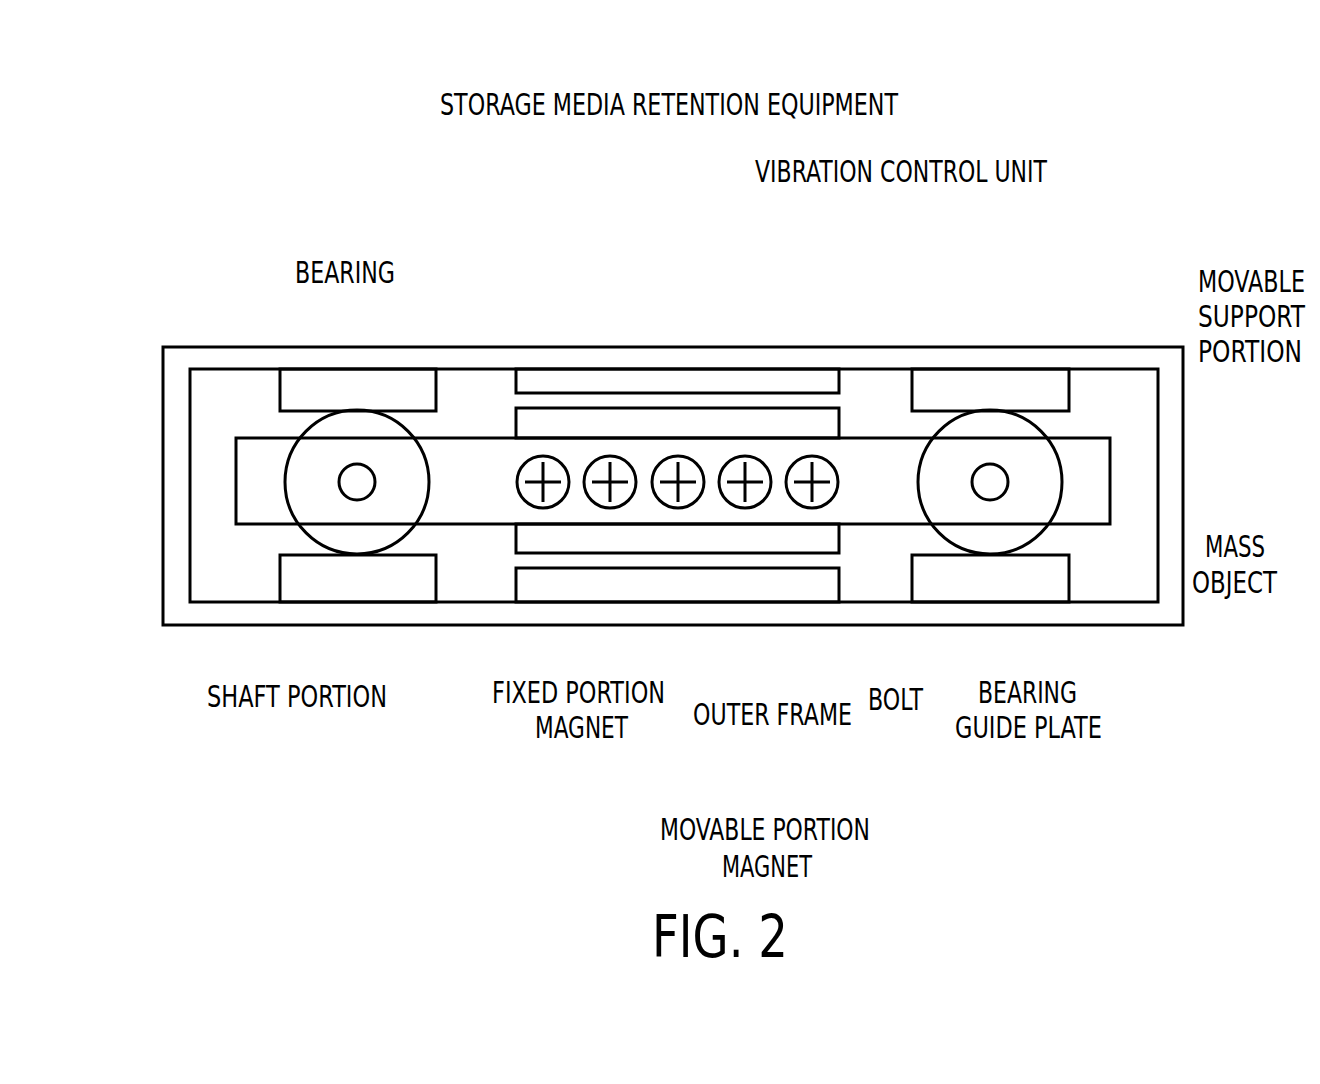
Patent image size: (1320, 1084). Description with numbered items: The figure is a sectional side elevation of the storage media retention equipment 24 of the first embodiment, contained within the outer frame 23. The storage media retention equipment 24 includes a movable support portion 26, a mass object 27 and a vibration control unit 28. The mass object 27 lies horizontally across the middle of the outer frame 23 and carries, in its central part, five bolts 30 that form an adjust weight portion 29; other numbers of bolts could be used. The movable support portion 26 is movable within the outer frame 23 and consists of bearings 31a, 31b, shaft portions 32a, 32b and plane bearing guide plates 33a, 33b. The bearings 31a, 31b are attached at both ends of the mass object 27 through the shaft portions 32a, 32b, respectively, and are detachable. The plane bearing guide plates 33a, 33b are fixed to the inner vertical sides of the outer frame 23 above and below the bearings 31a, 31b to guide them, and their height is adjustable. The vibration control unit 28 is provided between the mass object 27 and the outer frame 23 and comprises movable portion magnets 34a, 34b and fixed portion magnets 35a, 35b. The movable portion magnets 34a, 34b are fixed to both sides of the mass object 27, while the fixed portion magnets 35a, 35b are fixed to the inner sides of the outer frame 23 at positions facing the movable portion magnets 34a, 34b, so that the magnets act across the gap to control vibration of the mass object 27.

The outer frame 23 is at (822, 347).
The storage media retention equipment 24 is at (644, 193).
The movable support portion 26 is at (238, 398).
The mass object 27 is at (1102, 487).
The vibration control unit 28 is at (860, 387).
The adjust weight portion 29 is at (649, 452).
The bolts 30 is at (838, 487).
The bearing 31a is at (360, 420).
The bearing 31b is at (990, 420).
The shaft portion 32a is at (356, 484).
The shaft portion 32b is at (990, 484).
The plane bearing guide plate 33a is at (303, 380).
The plane bearing guide plate 33b is at (1045, 380).
The movable portion magnet 34a is at (615, 418).
The movable portion magnet 34b is at (662, 533).
The fixed portion magnet 35a is at (563, 380).
The fixed portion magnet 35b is at (565, 587).